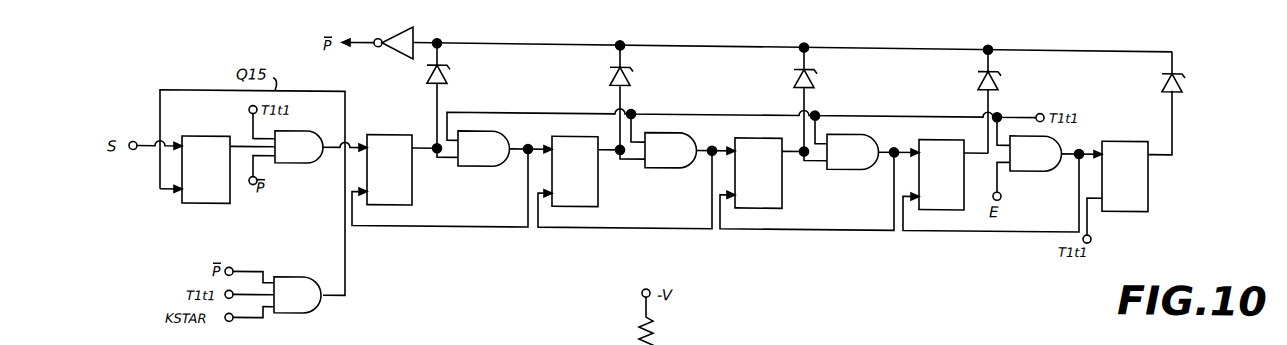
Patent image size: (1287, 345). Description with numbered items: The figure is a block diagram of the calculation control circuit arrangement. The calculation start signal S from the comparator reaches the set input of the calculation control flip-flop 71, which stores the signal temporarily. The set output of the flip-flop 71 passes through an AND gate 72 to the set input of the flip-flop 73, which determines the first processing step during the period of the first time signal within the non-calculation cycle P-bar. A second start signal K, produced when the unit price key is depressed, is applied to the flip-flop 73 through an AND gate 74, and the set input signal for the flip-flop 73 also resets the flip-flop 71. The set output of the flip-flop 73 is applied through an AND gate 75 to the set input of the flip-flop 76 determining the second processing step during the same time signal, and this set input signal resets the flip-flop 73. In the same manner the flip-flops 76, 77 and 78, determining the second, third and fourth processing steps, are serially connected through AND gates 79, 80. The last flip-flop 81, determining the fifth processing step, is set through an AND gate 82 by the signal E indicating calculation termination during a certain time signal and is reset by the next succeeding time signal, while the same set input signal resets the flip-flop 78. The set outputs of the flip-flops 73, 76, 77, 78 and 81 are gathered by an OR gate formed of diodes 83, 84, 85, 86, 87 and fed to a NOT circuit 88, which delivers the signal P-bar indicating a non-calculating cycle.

The calculation control flip-flop 71 is at (214, 123).
The AND gate 72 is at (299, 163).
The flip-flop 73 is at (398, 120).
The AND gate 74 is at (296, 316).
The AND gate 75 is at (476, 166).
The flip-flop 76 is at (584, 126).
The flip-flop 77 is at (772, 125).
The flip-flop 78 is at (953, 124).
The AND gate 79 is at (658, 166).
The AND gate 80 is at (839, 165).
The flip-flop 81 is at (1148, 180).
The AND gate 82 is at (1039, 162).
The diode 83 is at (445, 66).
The diode 84 is at (629, 67).
The diode 85 is at (813, 67).
The diode 86 is at (1003, 69).
The diode 87 is at (1185, 73).
The NOT circuit 88 is at (400, 51).